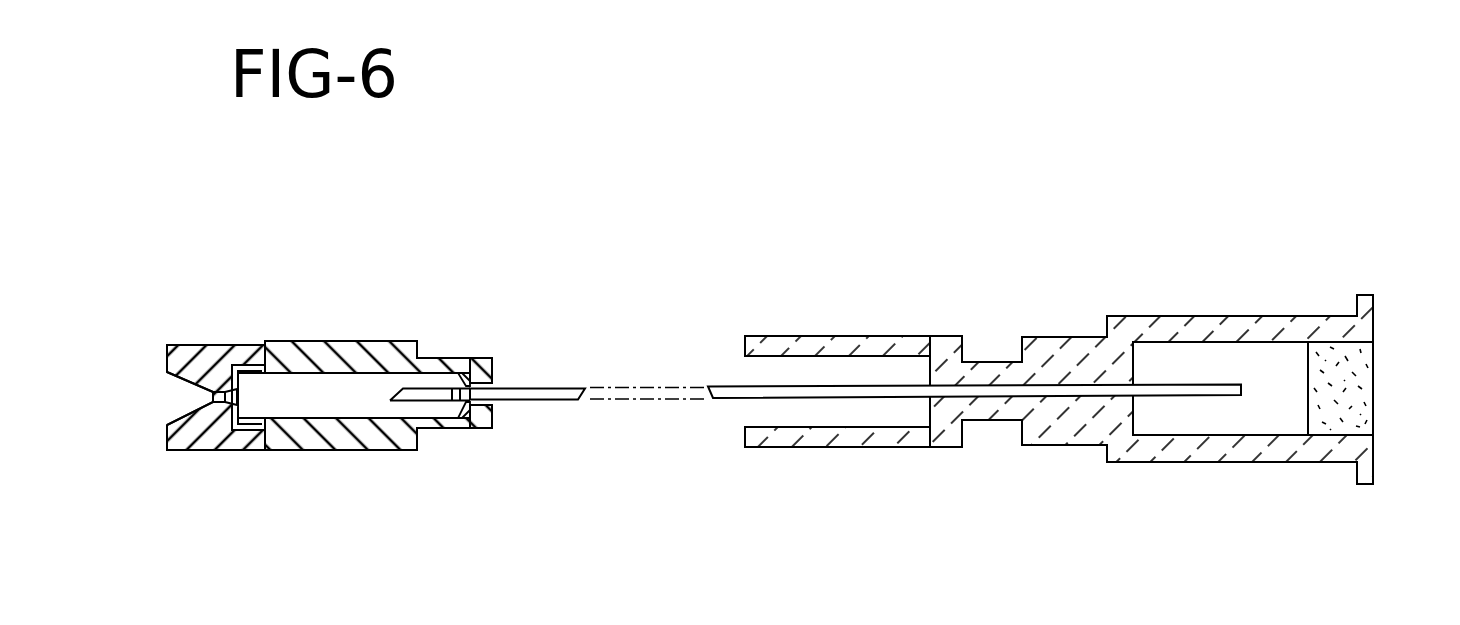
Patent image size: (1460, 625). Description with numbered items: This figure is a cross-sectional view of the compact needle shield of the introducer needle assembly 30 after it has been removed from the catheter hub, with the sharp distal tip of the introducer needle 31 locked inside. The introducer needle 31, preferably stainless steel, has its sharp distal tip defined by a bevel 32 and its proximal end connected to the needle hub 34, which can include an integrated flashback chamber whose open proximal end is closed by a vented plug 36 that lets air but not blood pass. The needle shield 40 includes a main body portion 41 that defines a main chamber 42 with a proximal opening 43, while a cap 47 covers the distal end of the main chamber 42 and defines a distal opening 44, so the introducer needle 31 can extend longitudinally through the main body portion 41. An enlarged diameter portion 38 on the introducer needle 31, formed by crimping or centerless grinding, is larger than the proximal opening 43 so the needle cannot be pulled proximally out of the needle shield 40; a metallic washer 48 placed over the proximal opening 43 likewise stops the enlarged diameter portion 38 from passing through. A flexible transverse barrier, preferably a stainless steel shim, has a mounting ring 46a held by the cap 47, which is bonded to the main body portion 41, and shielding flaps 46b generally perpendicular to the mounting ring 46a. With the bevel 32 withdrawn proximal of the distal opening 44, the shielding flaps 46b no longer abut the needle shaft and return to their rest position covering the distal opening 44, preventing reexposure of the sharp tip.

The introducer needle assembly 30 is at (785, 190).
The introducer needle 31 is at (727, 398).
The bevel 32 is at (390, 400).
The needle hub 34 is at (1178, 462).
The vented plug 36 is at (1362, 381).
The enlarged diameter portion 38 is at (467, 413).
The needle shield 40 is at (398, 340).
The main body portion 41 is at (290, 446).
The main chamber 42 is at (348, 398).
The proximal opening 43 is at (468, 390).
The distal opening 44 is at (216, 397).
The mounting ring 46a is at (241, 437).
The shielding flaps 46b is at (296, 313).
The cap 47 is at (207, 440).
The metallic washer 48 is at (459, 372).